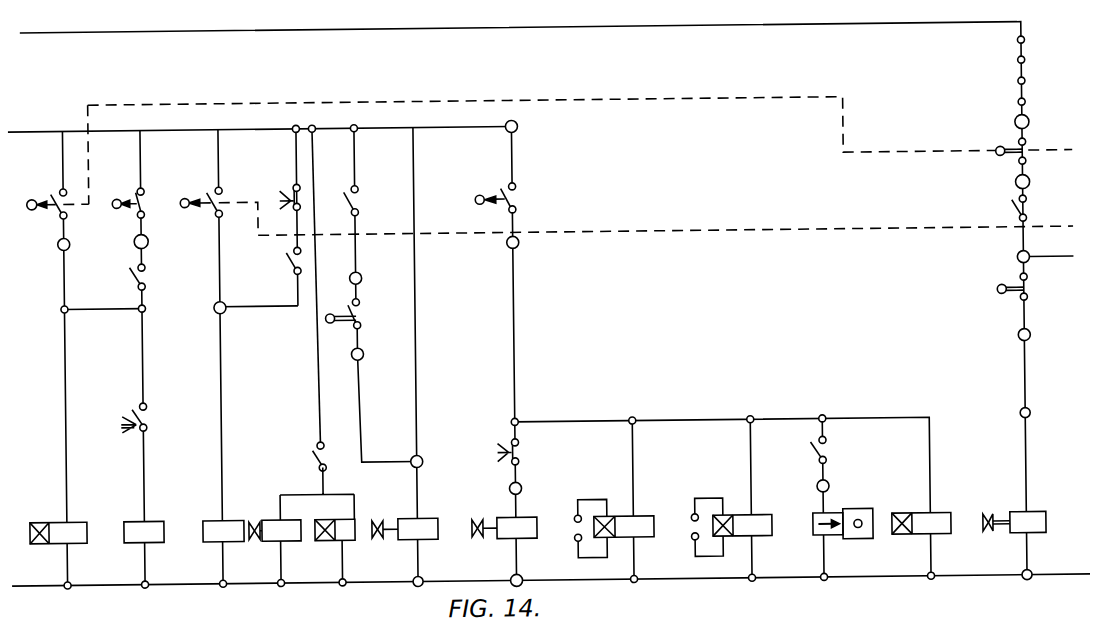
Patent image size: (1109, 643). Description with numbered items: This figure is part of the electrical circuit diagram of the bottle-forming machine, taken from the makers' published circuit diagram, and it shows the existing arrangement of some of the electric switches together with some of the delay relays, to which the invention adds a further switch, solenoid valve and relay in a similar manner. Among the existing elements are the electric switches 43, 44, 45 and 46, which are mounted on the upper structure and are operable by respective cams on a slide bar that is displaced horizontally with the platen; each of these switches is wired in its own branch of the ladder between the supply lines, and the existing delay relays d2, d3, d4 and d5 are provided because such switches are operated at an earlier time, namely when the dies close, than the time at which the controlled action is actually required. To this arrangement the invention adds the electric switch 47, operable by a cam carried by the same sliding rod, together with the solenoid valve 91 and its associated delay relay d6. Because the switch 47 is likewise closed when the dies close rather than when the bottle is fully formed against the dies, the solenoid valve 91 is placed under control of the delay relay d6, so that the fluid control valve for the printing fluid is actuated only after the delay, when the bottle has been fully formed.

The electric switch 43 is at (998, 293).
The electric switch 44 is at (359, 317).
The electric switch 45 is at (108, 202).
The electric switch 46 is at (517, 198).
The electric switch 47 is at (313, 447).
The solenoid valve 91 is at (288, 540).
The delay relay d2 is at (58, 524).
The delay relay d3 is at (731, 525).
The delay relay d4 is at (614, 527).
The delay relay d5 is at (921, 513).
The delay relay d6 is at (320, 540).